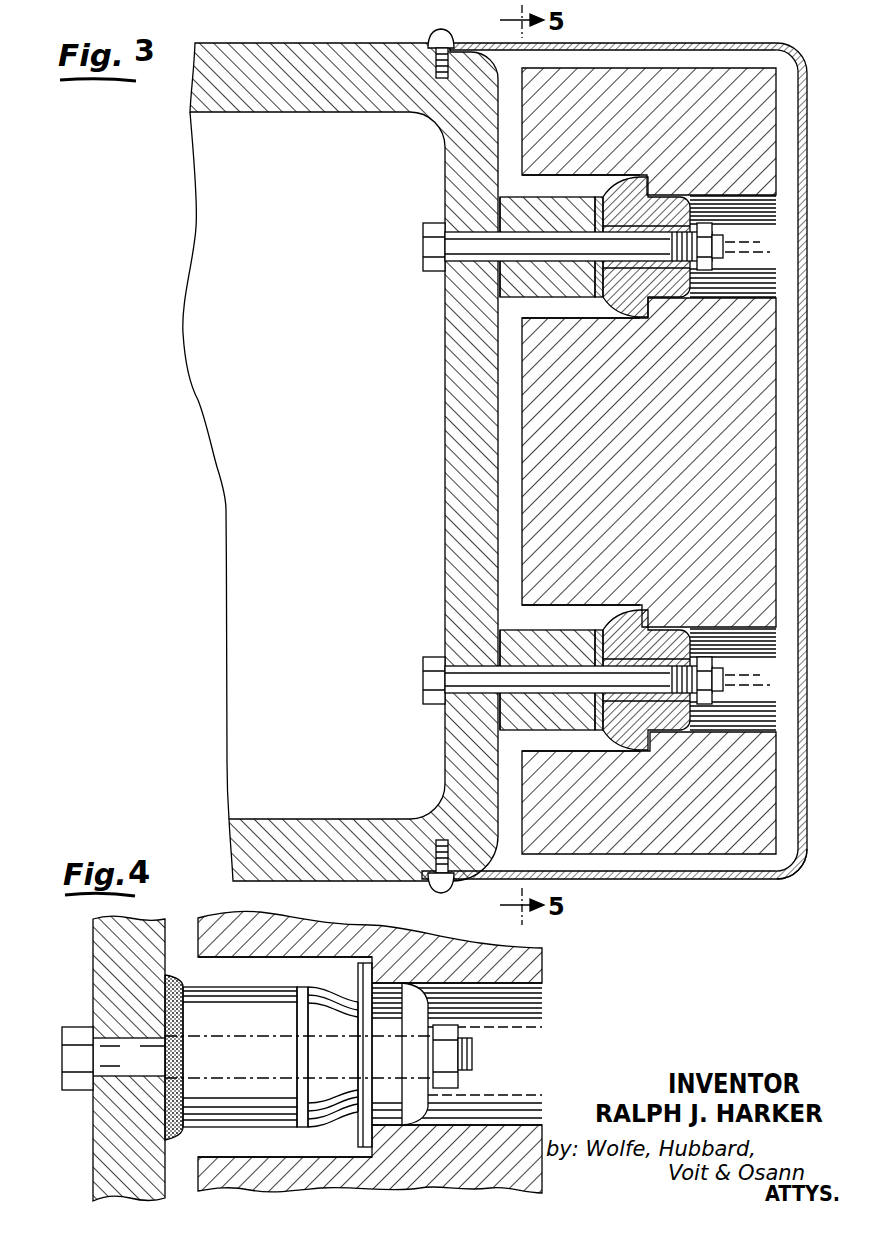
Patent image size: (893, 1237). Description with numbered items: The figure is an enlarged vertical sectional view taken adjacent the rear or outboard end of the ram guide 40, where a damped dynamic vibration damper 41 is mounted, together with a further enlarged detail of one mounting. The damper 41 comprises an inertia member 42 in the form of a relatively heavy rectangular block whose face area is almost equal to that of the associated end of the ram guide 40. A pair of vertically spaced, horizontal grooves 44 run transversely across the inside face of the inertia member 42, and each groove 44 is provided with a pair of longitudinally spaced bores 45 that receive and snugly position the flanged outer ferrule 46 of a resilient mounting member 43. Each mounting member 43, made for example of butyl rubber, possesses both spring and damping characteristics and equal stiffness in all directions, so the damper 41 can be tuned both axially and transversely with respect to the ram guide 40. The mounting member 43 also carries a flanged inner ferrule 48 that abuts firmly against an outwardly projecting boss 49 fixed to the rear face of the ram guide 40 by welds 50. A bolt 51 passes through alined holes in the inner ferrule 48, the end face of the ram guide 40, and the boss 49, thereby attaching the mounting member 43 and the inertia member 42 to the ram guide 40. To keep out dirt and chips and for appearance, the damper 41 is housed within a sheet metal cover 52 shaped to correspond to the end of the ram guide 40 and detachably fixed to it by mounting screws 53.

In FIG. 3, the ram guide 40 is at (289, 43).
In FIG. 4, the ram guide 40 is at (93, 976).
In FIG. 3, the damped dynamic vibration damper 41 is at (708, 876).
In FIG. 3, the inertia member 42 is at (530, 460).
In FIG. 4, the inertia member 42 is at (543, 969).
In FIG. 3, the resilient mounting member 43 is at (680, 205).
In FIG. 4, the resilient mounting member 43 is at (326, 1130).
In FIG. 3, the groove 44 is at (557, 318).
In FIG. 4, the groove 44 is at (287, 958).
In FIG. 3, the bore 45 is at (768, 284).
In FIG. 4, the bore 45 is at (528, 1006).
In FIG. 3, the flanged outer ferrule 46 is at (650, 318).
In FIG. 4, the flanged outer ferrule 46 is at (370, 963).
In FIG. 3, the flanged inner ferrule 48 is at (598, 296).
In FIG. 4, the flanged inner ferrule 48 is at (300, 996).
In FIG. 3, the boss 49 is at (558, 205).
In FIG. 4, the boss 49 is at (222, 996).
In FIG. 3, the weld 50 is at (505, 200).
In FIG. 4, the weld 50 is at (177, 990).
In FIG. 3, the bolt 51 is at (428, 252).
In FIG. 4, the bolt 51 is at (463, 1050).
In FIG. 3, the sheet metal cover 52 is at (807, 462).
In FIG. 3, the mounting screw 53 is at (437, 33).